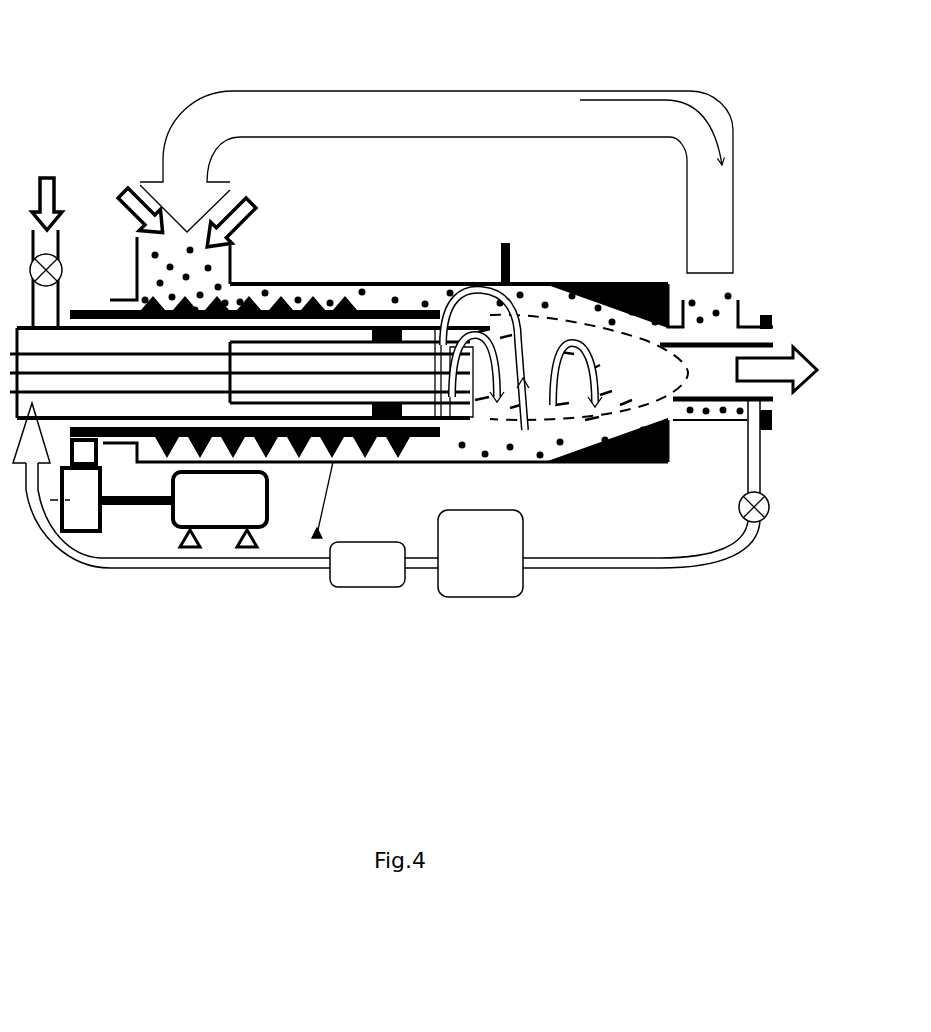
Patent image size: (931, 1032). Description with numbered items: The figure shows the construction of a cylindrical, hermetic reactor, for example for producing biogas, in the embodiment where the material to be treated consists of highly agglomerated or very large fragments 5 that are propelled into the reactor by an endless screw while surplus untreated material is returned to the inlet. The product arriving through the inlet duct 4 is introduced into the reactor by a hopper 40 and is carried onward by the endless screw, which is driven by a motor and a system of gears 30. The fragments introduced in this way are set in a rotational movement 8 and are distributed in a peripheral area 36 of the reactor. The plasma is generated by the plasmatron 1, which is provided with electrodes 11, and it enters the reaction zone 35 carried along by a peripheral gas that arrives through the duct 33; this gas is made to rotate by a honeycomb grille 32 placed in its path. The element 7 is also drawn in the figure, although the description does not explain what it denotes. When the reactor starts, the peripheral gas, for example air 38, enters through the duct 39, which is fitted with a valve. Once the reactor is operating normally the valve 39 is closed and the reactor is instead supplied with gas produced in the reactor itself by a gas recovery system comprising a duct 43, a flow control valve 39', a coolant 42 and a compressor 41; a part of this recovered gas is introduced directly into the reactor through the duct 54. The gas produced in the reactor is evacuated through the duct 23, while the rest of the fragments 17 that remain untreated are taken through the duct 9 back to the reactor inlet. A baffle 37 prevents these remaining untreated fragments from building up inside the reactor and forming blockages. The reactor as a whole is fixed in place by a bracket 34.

The plasmatron 1 is at (163, 150).
The inlet duct 4 is at (134, 184).
The fragments 5 is at (417, 308).
The gas flow zone 7 is at (533, 356).
The rotational movement 8 is at (532, 370).
The duct 9 is at (707, 295).
The electrodes 11 is at (253, 338).
The rest of the fragments 17 is at (648, 275).
The duct 23 is at (717, 335).
The motor and system of gears 30 is at (88, 503).
The honeycomb grille 32 is at (320, 348).
The duct 33 is at (380, 308).
The bracket 34 is at (480, 281).
The reaction zone 35 is at (506, 242).
The peripheral area 36 is at (567, 311).
The baffle 37 is at (623, 325).
The air 38 is at (47, 175).
The duct with valve 39 is at (61, 249).
The flow control valve 39' is at (761, 575).
The hopper 40 is at (122, 198).
The compressor 41 is at (373, 576).
The coolant 42 is at (514, 594).
The duct 43 is at (633, 569).
The duct 54 is at (317, 466).